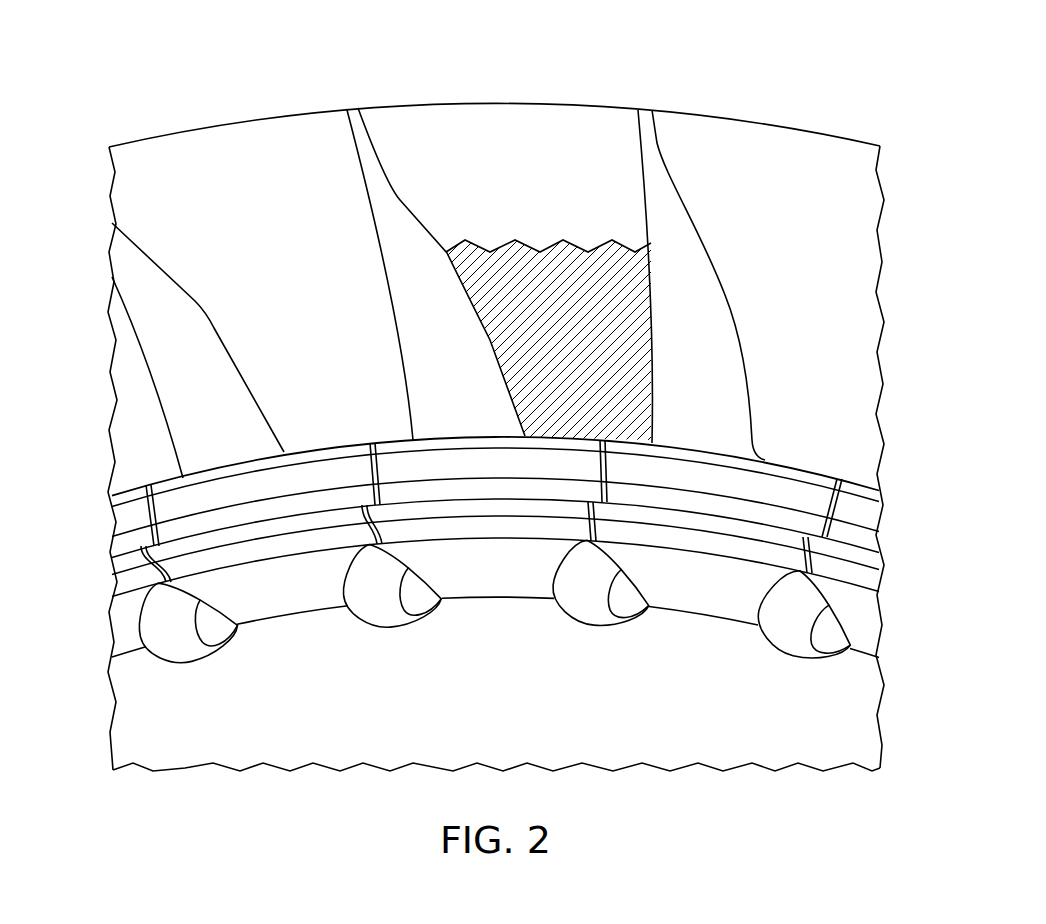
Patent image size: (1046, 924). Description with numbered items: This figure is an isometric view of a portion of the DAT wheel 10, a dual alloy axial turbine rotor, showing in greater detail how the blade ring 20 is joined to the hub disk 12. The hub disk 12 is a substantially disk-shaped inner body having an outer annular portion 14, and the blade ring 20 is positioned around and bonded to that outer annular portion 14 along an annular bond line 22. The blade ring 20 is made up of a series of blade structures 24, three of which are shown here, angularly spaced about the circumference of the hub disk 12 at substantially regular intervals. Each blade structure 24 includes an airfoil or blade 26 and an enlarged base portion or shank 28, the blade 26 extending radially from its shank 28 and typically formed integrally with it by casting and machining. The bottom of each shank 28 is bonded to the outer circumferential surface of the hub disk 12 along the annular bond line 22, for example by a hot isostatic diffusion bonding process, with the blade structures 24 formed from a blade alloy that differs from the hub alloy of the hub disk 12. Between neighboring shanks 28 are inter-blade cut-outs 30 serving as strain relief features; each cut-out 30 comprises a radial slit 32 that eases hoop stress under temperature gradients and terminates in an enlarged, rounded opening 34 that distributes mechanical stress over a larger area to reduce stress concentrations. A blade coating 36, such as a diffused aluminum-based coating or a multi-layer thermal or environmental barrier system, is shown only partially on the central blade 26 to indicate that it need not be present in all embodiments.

The DAT wheel 10 is at (76, 264).
The hub disk 12 is at (216, 780).
The outer annular portion 14 is at (524, 737).
The blade ring 20 is at (886, 143).
The annular bond line 22 is at (286, 619).
The blade structure 24 is at (217, 112).
The blade 26 is at (302, 295).
The shank 28 is at (240, 491).
The inter-blade cut-out 30 is at (184, 664).
The radial slit 32 is at (139, 523).
The enlarged opening 34 is at (148, 629).
The blade coating 36 is at (582, 350).